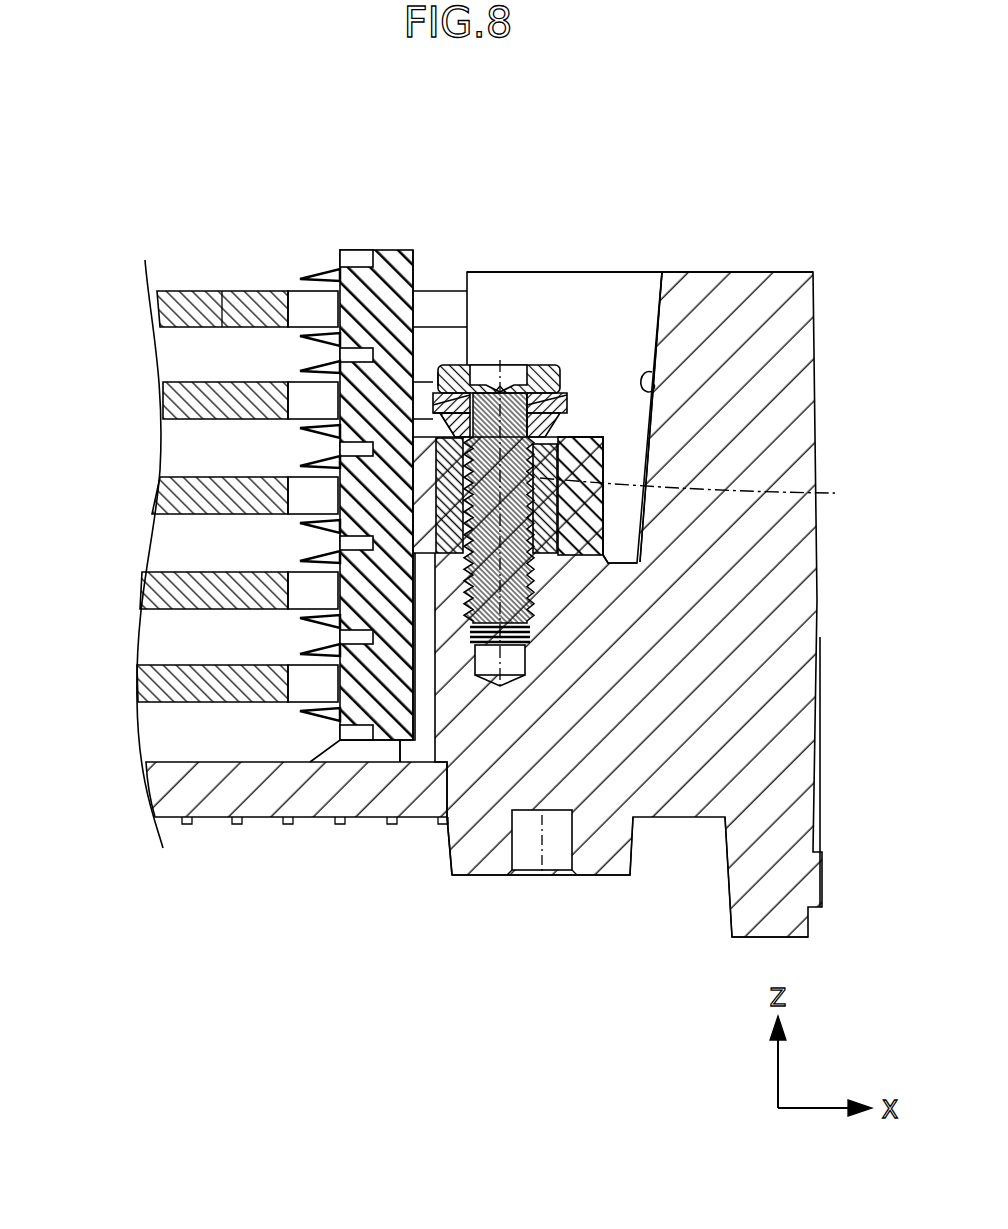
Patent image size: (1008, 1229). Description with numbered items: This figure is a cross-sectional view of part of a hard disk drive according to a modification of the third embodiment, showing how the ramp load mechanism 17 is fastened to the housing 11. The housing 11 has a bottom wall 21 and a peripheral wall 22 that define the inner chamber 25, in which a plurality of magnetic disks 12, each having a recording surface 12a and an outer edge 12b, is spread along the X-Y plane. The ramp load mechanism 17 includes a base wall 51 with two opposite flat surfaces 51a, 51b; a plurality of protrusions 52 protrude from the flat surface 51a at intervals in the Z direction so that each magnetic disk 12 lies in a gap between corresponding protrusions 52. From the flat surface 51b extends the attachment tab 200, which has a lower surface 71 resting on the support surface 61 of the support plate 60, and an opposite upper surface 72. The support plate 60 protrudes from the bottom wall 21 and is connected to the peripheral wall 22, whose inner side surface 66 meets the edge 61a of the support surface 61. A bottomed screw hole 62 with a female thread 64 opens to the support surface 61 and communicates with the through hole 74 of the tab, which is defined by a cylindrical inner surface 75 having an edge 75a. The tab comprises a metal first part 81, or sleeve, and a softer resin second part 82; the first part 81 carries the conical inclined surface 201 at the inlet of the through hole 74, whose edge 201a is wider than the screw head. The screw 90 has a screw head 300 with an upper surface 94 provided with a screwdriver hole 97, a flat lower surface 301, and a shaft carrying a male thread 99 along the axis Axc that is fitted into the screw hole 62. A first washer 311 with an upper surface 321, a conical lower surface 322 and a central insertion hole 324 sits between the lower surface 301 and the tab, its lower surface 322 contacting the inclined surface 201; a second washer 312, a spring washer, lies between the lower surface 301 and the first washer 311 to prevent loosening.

The housing 11 is at (772, 266).
The magnetic disk 12 is at (261, 450).
The recording surface 12a is at (185, 289).
The outer edge 12b is at (313, 303).
The ramp load mechanism 17 is at (373, 746).
The bottom wall 21 is at (270, 795).
The peripheral wall 22 is at (790, 445).
The inner chamber 25 is at (133, 232).
The base wall 51 is at (386, 439).
The flat surface 51a is at (358, 249).
The flat surface 51b is at (416, 260).
The protrusion 52 is at (300, 371).
The support plate 60 is at (587, 622).
The support surface 61 is at (560, 560).
The edge 61a is at (613, 562).
The screw hole 62 is at (524, 872).
The female thread 64 is at (492, 690).
The inner side surface 66 is at (655, 380).
The lower surface 71 is at (563, 560).
The upper surface 72 is at (648, 470).
The through hole 74 is at (661, 841).
The inner surface 75 is at (562, 700).
The edge 75a is at (570, 436).
The first part 81 is at (605, 440).
The second part 82 is at (742, 496).
The screw 90 is at (296, 536).
The upper surface 94 is at (553, 405).
The hole 97 is at (546, 364).
The male thread 99 is at (427, 640).
The attachment tab 200 is at (572, 516).
The inclined surface 201 is at (577, 430).
The edge 201a is at (446, 364).
The screw head 300 is at (296, 536).
The lower surface 301 is at (445, 402).
The first washer 311 is at (462, 412).
The second washer 312 is at (452, 416).
The upper surface 321 is at (480, 395).
The lower surface 322 is at (550, 412).
The insertion hole 324 is at (507, 400).
The axis Axc is at (713, 490).